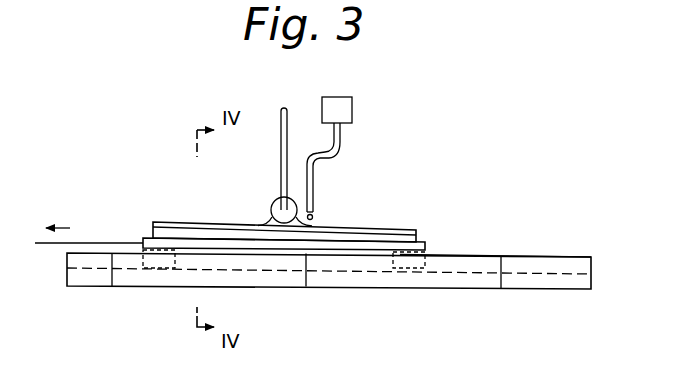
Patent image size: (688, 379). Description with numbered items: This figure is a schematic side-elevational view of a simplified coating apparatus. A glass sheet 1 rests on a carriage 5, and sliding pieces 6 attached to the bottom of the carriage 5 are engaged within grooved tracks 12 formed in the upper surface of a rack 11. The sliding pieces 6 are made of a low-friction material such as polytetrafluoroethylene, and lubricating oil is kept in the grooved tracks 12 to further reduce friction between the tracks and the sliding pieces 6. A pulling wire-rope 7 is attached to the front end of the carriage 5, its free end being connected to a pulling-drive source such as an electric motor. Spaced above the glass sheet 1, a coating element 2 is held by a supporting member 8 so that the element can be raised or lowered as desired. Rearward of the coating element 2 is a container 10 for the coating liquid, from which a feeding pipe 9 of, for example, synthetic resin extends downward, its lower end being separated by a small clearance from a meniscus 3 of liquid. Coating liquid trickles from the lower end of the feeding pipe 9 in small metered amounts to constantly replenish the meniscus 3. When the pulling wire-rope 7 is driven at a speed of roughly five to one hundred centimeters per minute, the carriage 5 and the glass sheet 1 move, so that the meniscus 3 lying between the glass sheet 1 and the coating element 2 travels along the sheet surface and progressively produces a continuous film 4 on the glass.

The glass sheet 1 is at (403, 231).
The coating element 2 is at (273, 199).
The meniscus 3 is at (258, 210).
The film 4 is at (172, 222).
The carriage 5 is at (427, 244).
The sliding pieces 6 is at (160, 252).
The pulling wire-rope 7 is at (45, 244).
The supporting member 8 is at (290, 110).
The feeding pipe 9 is at (313, 187).
The container 10 is at (352, 114).
The rack 11 is at (553, 290).
The grooved tracks 12 is at (550, 257).